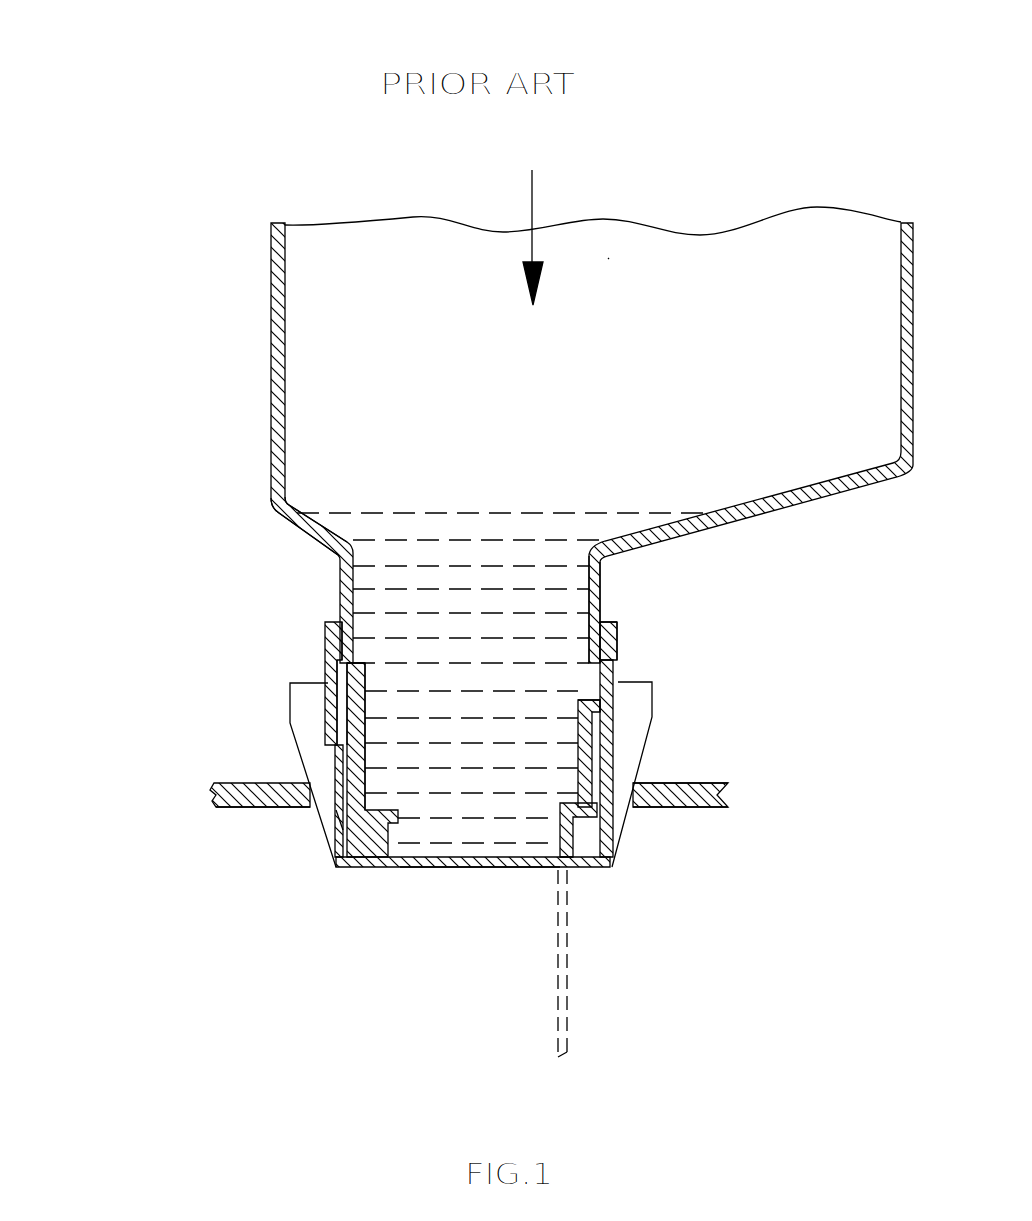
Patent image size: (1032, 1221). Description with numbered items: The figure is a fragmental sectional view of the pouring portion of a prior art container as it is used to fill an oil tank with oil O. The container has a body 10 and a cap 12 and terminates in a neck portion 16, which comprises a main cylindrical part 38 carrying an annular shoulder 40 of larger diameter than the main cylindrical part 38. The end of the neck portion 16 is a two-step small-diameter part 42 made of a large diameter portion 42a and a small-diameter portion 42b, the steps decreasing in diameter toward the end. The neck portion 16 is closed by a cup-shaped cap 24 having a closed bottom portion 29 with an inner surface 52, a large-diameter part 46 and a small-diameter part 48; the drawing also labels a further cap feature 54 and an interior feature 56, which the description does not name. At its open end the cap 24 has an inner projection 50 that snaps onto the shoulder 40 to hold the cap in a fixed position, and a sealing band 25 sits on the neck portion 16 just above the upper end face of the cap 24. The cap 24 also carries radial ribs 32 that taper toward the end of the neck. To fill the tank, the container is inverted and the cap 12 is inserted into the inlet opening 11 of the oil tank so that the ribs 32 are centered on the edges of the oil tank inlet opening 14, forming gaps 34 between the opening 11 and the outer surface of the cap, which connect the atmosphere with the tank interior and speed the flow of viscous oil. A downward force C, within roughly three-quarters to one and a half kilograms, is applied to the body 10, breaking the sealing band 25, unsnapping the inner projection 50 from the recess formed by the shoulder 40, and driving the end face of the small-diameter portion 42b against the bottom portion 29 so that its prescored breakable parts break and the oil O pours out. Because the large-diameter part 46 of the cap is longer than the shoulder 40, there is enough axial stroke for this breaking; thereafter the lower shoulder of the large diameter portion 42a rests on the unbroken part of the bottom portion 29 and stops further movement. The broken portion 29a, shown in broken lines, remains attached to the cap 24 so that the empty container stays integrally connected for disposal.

The container body 10 is at (266, 322).
The oil O is at (608, 258).
The force C is at (550, 234).
The neck portion 16 is at (331, 566).
The inner projection 50 is at (330, 662).
The large-diameter part 46 is at (335, 688).
The sealing band 25 is at (618, 668).
The main cylindrical part 38 is at (590, 605).
The annular shoulder 40 is at (600, 585).
The bottom portion 29 is at (427, 868).
The inner surface 52 is at (477, 867).
The inner wall 56 is at (392, 745).
The housing top 54 is at (338, 738).
The radial ribs 32 is at (312, 705).
The cap 12 is at (641, 668).
The oil tank inlet opening 14 is at (732, 790).
The inlet opening 11 is at (640, 795).
The gaps 34 is at (640, 803).
The small-diameter part 48 is at (307, 807).
The cap 24 is at (334, 817).
The small-diameter part 42 is at (570, 832).
The large diameter portion 42a is at (593, 724).
The small-diameter portion 42b is at (575, 866).
The broken portion 29a is at (568, 990).